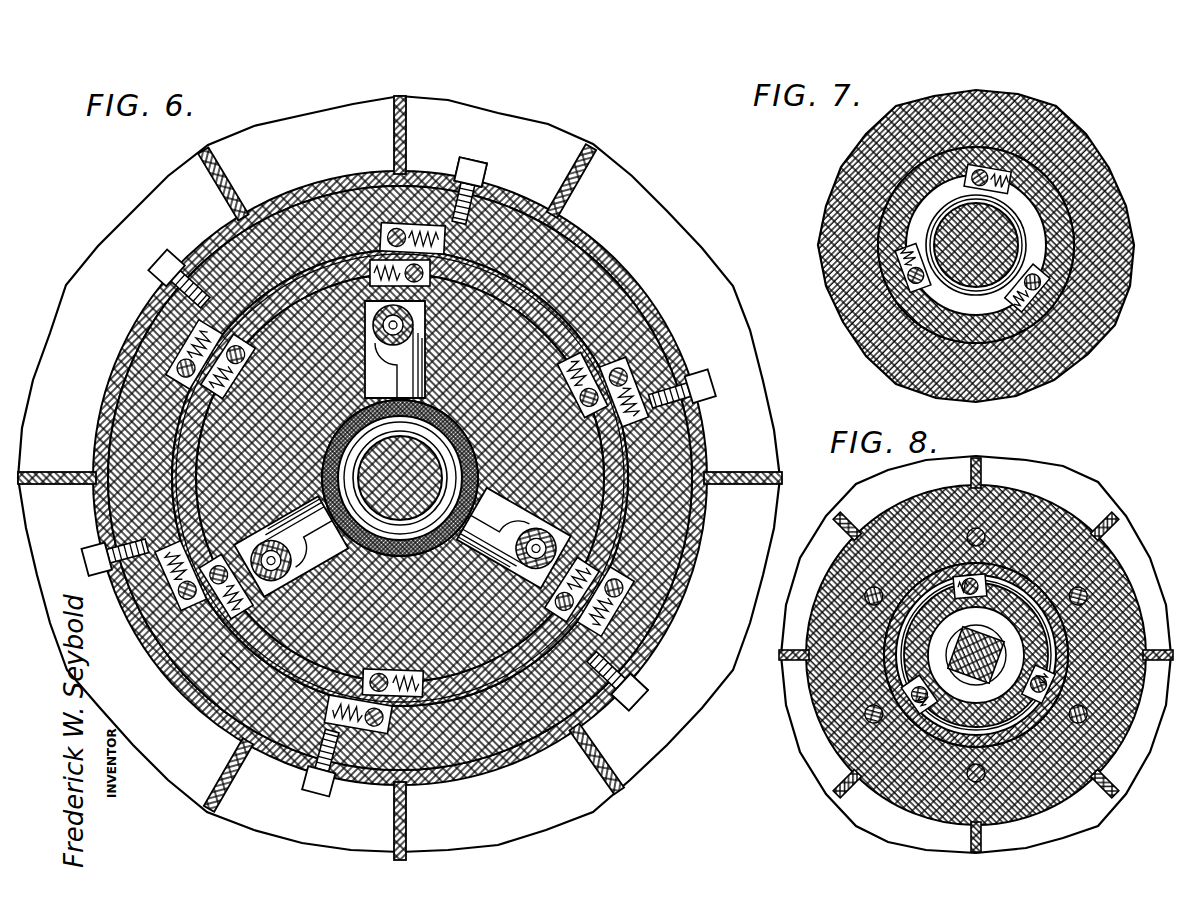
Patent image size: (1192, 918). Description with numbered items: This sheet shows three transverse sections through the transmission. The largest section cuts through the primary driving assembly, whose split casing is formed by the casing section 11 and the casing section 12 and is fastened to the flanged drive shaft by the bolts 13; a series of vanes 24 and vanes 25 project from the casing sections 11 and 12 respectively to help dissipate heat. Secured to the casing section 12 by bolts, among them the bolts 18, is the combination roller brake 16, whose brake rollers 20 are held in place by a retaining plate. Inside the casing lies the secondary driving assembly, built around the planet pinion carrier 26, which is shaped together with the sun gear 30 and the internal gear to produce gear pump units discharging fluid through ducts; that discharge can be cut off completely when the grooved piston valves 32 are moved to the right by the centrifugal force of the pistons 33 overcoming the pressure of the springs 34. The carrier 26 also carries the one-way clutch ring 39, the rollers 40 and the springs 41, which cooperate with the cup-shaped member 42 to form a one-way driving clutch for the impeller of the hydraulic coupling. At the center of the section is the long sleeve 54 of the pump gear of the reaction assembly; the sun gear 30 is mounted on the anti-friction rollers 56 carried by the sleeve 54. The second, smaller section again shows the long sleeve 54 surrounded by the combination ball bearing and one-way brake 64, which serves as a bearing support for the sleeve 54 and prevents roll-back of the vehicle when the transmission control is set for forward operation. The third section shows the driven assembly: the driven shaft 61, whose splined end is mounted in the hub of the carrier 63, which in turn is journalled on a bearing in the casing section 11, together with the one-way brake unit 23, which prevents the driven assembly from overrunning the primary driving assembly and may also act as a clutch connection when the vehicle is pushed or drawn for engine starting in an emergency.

In FIG. 8, the casing section 11 is at (858, 522).
In FIG. 6, the casing section 12 is at (585, 225).
In FIG. 8, the bolts 13 is at (970, 530).
In FIG. 6, the roller brake 16 is at (585, 280).
In FIG. 6, the bolts 18 is at (470, 165).
In FIG. 6, the brake rollers 20 is at (405, 215).
In FIG. 8, the roller brake unit 23 is at (1042, 660).
In FIG. 8, the vanes 24 is at (1072, 490).
In FIG. 6, the vanes 25 is at (575, 160).
In FIG. 6, the planet pinion carrier 26 is at (560, 445).
In FIG. 6, the sun gear 30 is at (342, 420).
In FIG. 6, the grooved piston valves 32 is at (402, 338).
In FIG. 6, the pistons 33 is at (365, 363).
In FIG. 6, the springs 34 is at (258, 535).
In FIG. 6, the one-way clutch ring 39 is at (590, 490).
In FIG. 6, the rollers 40 is at (453, 260).
In FIG. 6, the springs 41 is at (340, 262).
In FIG. 6, the cup-shaped member 42 is at (250, 682).
In FIG. 6, the long sleeve 54 is at (434, 420).
In FIG. 7, the long sleeve 54 is at (986, 230).
In FIG. 6, the anti-friction rollers 56 is at (376, 522).
In FIG. 6, the driven shaft 61 is at (402, 506).
In FIG. 7, the driven shaft 61 is at (1012, 208).
In FIG. 8, the driven shaft 61 is at (992, 650).
In FIG. 7, the carrier 63 is at (862, 146).
In FIG. 8, the carrier 63 is at (1000, 602).
In FIG. 7, the combination ball bearing and one-way brake 64 is at (992, 193).